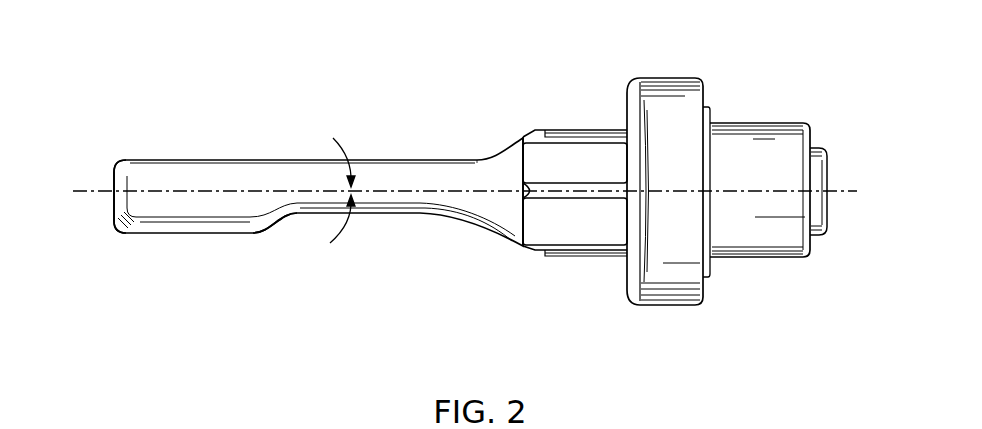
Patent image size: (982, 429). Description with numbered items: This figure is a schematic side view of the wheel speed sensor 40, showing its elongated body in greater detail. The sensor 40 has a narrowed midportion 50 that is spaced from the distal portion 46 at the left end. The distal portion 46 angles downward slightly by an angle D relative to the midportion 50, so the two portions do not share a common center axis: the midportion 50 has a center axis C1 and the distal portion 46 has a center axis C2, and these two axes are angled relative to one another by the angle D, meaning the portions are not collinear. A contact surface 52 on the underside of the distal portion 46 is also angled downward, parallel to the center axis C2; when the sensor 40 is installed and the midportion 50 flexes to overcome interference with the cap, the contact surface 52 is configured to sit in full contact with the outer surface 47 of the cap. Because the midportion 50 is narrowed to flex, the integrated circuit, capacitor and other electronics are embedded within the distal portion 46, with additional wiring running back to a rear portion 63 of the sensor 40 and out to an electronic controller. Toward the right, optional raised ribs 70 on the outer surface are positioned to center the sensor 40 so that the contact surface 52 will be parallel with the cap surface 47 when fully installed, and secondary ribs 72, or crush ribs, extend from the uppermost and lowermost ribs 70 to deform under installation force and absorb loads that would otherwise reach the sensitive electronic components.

The sensor 40 is at (452, 59).
The distal portion 46 is at (165, 158).
The midportion 50 is at (378, 213).
The contact surface 52 is at (200, 235).
The center axis C2 is at (222, 190).
The center axis C1 is at (467, 190).
The angle D is at (338, 150).
The raised ribs 70 is at (590, 141).
The secondary ribs 72 is at (563, 132).
The outer surface 47 is at (667, 306).
The rear portion 63 is at (755, 258).